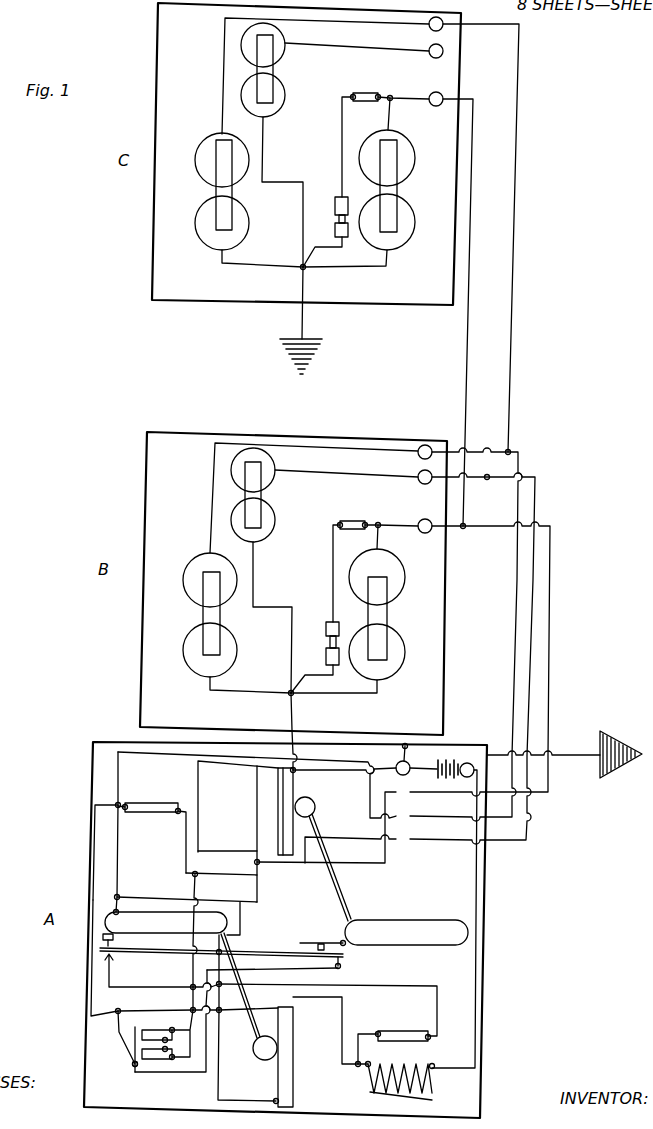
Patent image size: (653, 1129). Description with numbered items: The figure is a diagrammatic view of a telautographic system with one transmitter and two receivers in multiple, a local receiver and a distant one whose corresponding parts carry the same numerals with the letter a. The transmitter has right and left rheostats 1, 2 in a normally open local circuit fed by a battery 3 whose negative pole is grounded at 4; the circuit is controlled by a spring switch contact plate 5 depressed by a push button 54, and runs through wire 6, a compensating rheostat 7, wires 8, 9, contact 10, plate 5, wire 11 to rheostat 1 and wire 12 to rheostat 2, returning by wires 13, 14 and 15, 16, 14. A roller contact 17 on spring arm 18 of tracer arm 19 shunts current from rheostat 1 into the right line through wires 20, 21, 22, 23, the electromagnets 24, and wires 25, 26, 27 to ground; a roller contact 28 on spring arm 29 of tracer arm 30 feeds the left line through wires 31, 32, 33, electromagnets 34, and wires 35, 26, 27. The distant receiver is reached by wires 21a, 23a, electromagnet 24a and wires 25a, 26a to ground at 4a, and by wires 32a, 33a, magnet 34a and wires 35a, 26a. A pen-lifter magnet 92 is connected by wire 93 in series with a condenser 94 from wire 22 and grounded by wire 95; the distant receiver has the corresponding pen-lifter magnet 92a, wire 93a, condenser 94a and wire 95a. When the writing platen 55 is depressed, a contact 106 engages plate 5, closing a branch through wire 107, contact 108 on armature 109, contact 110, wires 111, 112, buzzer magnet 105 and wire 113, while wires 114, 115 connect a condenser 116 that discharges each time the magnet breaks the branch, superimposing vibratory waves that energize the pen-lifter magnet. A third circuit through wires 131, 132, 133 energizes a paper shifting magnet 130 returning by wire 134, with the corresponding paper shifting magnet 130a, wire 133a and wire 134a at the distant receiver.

The right rheostat 1 is at (299, 781).
The left rheostat 2 is at (300, 1050).
The battery 3 is at (447, 777).
The ground 4 is at (611, 748).
The spring switch contact plate 5 is at (174, 953).
The wire 6 is at (482, 862).
The rheostat 7 is at (407, 1082).
The wire 8 is at (366, 1055).
The wire 9 is at (343, 1021).
The stationary contact 10 is at (149, 970).
The wire 11 is at (252, 893).
The wire 12 is at (216, 1086).
The wire 13 is at (243, 854).
The wire 14 is at (199, 809).
The wire 15 is at (278, 1013).
The wire 16 is at (197, 889).
The roller contact 17 is at (313, 811).
The spring arm 18 is at (343, 909).
The tracer arm 19 is at (406, 932).
The wire 20 is at (366, 867).
The wire 21 is at (549, 791).
The wire 22 is at (417, 527).
The wire 23 is at (379, 550).
The electromagnets 24 is at (381, 614).
The wire 25 is at (369, 693).
The wire 26 is at (291, 717).
The wire 27 is at (498, 747).
The roller contact 28 is at (258, 1061).
The spring arm 29 is at (254, 1030).
The tracer arm 30 is at (181, 916).
The wire 31 is at (121, 790).
The wire 32 is at (514, 590).
The wire 33 is at (368, 446).
The electromagnets 34 is at (204, 615).
The wire 35 is at (246, 690).
The push button 54 is at (115, 940).
The writing platen 55 is at (331, 946).
The pen-lifter magnet 92 is at (327, 622).
The wire 93 is at (332, 562).
The condenser 94 is at (351, 521).
The wire 95 is at (316, 676).
The buzzer magnet 105 is at (167, 1035).
The contact 106 is at (342, 967).
The wire 107 is at (307, 984).
The contact 108 is at (132, 1060).
The armature 109 is at (130, 1040).
The contact 110 is at (121, 1036).
The wire 111 is at (90, 1018).
The wire 112 is at (150, 1011).
The wire 113 is at (190, 1019).
The wire 114 is at (92, 884).
The wire 115 is at (185, 843).
The condenser 116 is at (168, 809).
The paper shifting magnet 130 is at (264, 495).
The wire 131 is at (358, 838).
The wire 132 is at (440, 832).
The wire 133 is at (316, 477).
The wire 134 is at (283, 606).
The ground 4a is at (312, 356).
The wire 21a is at (465, 382).
The wire 23a is at (392, 124).
The electromagnet 24a is at (396, 190).
The wire 25a is at (377, 269).
The wire 26a is at (304, 291).
The wire 32a is at (514, 309).
The wire 33a is at (378, 22).
The magnet 34a is at (211, 191).
The wire 35a is at (266, 265).
The pen-lifter magnet 92a is at (339, 197).
The wire 93a is at (341, 151).
The condenser 94a is at (372, 92).
The wire 95a is at (333, 247).
The paper shifting magnet 130a is at (279, 70).
The wire 133a is at (340, 48).
The wire 134a is at (297, 186).